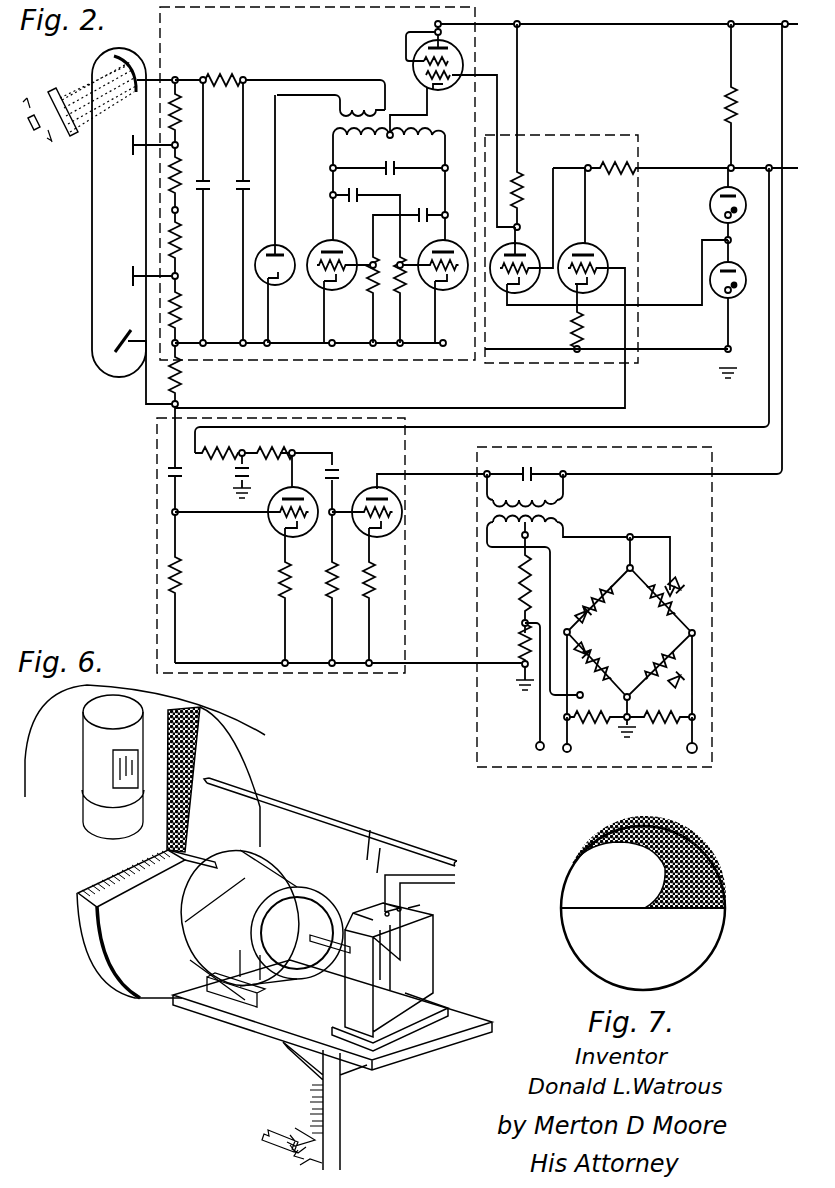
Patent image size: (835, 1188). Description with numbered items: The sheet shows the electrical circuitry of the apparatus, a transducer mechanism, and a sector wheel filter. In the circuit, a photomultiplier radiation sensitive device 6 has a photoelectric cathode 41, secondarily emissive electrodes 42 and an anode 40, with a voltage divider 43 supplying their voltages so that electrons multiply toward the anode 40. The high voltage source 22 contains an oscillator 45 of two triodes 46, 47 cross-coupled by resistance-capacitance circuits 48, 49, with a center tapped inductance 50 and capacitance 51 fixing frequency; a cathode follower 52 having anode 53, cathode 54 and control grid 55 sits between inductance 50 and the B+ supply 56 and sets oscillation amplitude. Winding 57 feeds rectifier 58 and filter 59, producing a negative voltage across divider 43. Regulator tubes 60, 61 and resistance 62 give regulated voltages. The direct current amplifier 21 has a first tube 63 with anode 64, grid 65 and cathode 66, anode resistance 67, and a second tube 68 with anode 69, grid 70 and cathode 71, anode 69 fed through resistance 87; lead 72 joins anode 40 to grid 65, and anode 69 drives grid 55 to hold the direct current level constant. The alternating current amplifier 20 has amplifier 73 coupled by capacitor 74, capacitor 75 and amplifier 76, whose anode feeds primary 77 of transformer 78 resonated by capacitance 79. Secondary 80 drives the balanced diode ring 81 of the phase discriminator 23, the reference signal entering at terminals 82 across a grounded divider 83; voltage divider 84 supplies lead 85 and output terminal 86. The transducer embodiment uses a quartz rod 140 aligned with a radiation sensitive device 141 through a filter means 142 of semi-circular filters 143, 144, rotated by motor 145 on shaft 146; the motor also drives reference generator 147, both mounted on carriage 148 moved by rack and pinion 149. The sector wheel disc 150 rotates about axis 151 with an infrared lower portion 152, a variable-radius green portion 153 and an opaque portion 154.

In FIG. 2, the radiation sensitive device 6 is at (92, 247).
In FIG. 2, the alternating current amplifier 20 is at (303, 673).
In FIG. 2, the direct current amplifier 21 is at (588, 134).
In FIG. 2, the high voltage source 22 is at (295, 7).
In FIG. 2, the phase discriminating means 23 is at (712, 614).
In FIG. 2, the anode member 40 is at (121, 358).
In FIG. 2, the photoelectric cathode element 41 is at (127, 56).
In FIG. 2, the secondarily emissive electrodes 42 is at (132, 150).
In FIG. 2, the voltage divider 43 is at (165, 249).
In FIG. 2, the oscillator device 45 is at (380, 220).
In FIG. 2, the electron discharge device 46 is at (332, 288).
In FIG. 2, the electron discharge device 47 is at (426, 289).
In FIG. 2, the resistance-capacitance circuit 48 is at (366, 202).
In FIG. 2, the resistance-capacitance circuit 49 is at (415, 210).
In FIG. 2, the center tapped inductance 50 is at (333, 131).
In FIG. 2, the capacitance 51 is at (394, 168).
In FIG. 2, the cathode follower 52 is at (451, 125).
In FIG. 2, the anode 53 is at (448, 48).
In FIG. 2, the cathode 54 is at (440, 93).
In FIG. 2, the control grid 55 is at (462, 78).
In FIG. 2, the supply conductor 56 is at (600, 25).
In FIG. 2, the transformer winding 57 is at (360, 104).
In FIG. 2, the rectifier 58 is at (260, 250).
In FIG. 2, the resistance-capacitance filter 59 is at (280, 208).
In FIG. 2, the gaseous voltage regulator tube 60 is at (711, 213).
In FIG. 2, the gaseous voltage regulator tube 61 is at (738, 297).
In FIG. 2, the resistance element 62 is at (727, 101).
In FIG. 2, the first electron discharge device 63 is at (588, 242).
In FIG. 2, the anode member 64 is at (583, 243).
In FIG. 2, the control grid 65 is at (600, 268).
In FIG. 2, the cathode 66 is at (590, 284).
In FIG. 2, the resistance 67 is at (628, 165).
In FIG. 2, the second electron discharge device 68 is at (518, 246).
In FIG. 2, the anode member 69 is at (512, 251).
In FIG. 2, the control electrode 70 is at (526, 282).
In FIG. 2, the cathode 71 is at (509, 302).
In FIG. 2, the lead 72 is at (499, 408).
In FIG. 2, the first amplifier 73 is at (272, 530).
In FIG. 2, the coupling capacitor 74 is at (168, 472).
In FIG. 2, the coupling capacitor 75 is at (338, 472).
In FIG. 2, the second amplifier 76 is at (400, 537).
In FIG. 2, the transformer primary 77 is at (487, 497).
In FIG. 2, the transformer element 78 is at (555, 513).
In FIG. 2, the capacitance 79 is at (532, 469).
In FIG. 2, the secondary 80 is at (487, 543).
In FIG. 2, the balanced diode ring 81 is at (629, 627).
In FIG. 2, the terminals 82 is at (572, 750).
In FIG. 2, the balancing resistors 83 is at (629, 730).
In FIG. 2, the voltage divider 84 is at (522, 606).
In FIG. 2, the lead 85 is at (538, 722).
In FIG. 2, the output terminal 86 is at (536, 747).
In FIG. 2, the resistance 87 is at (524, 183).
In FIG. 6, the quartz rod 140 is at (368, 832).
In FIG. 6, the radiation sensitive device 141 is at (88, 803).
In FIG. 6, the filter means 142 is at (85, 947).
In FIG. 6, the semi-circular filter portion 143 is at (146, 981).
In FIG. 6, the semi-circular filter means 144 is at (252, 788).
In FIG. 6, the constant speed motor 145 is at (280, 868).
In FIG. 6, the shaft 146 is at (197, 863).
In FIG. 6, the reference voltage generator 147 is at (432, 969).
In FIG. 6, the carriage means 148 is at (460, 1038).
In FIG. 6, the rack and pinion arrangement 149 is at (334, 1146).
In FIG. 7, the disc 150 is at (696, 844).
In FIG. 7, the axis 151 is at (648, 910).
In FIG. 7, the lower disc portion 152 is at (704, 951).
In FIG. 7, the green portion 153 is at (580, 864).
In FIG. 7, the opaque material 154 is at (724, 874).